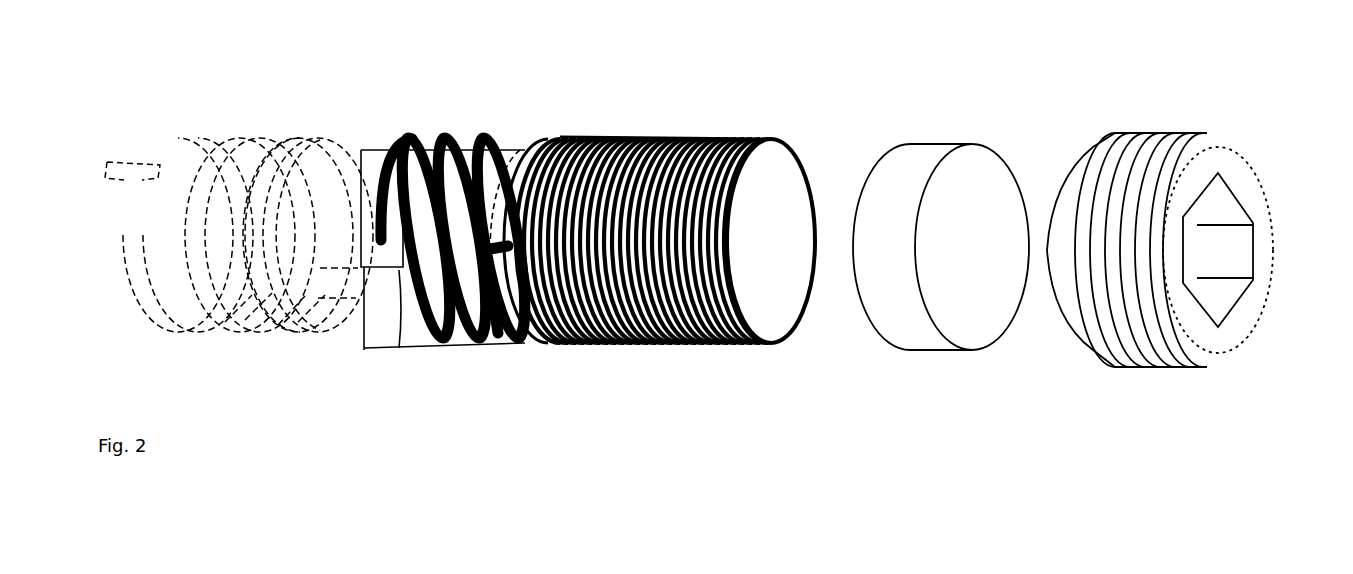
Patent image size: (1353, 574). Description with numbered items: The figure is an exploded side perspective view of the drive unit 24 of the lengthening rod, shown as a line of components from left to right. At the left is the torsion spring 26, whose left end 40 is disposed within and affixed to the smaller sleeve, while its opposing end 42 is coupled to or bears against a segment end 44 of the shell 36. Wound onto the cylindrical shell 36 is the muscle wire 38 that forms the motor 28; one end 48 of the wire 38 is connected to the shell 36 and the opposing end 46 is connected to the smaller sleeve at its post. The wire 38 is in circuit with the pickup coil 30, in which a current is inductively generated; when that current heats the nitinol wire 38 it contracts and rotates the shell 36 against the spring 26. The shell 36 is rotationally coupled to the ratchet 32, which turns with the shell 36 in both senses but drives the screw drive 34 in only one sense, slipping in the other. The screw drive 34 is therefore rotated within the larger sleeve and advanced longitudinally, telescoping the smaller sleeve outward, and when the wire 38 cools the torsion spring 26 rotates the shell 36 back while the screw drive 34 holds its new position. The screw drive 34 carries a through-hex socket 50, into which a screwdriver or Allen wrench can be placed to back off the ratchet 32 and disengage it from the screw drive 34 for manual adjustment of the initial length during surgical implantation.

The drive unit 24 is at (633, 70).
The torsion spring 26 is at (292, 345).
The motor 28 is at (447, 352).
The pickup coil 30 is at (630, 345).
The ratchet 32 is at (930, 351).
The screw drive 34 is at (1153, 368).
The shell 36 is at (522, 145).
The muscle wire 38 is at (527, 345).
The left end of torsion spring 40 is at (113, 160).
The opposing end of torsion spring 42 is at (370, 332).
The segment end of shell 44 is at (395, 332).
The opposing end of muscle wire 46 is at (370, 230).
The end of muscle wire 48 is at (543, 145).
The through-hex socket 50 is at (1232, 204).